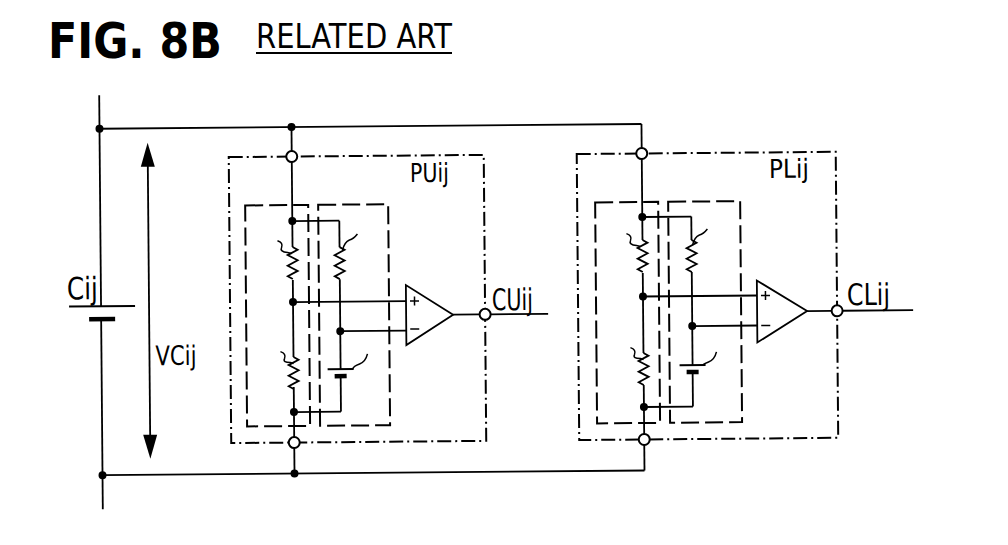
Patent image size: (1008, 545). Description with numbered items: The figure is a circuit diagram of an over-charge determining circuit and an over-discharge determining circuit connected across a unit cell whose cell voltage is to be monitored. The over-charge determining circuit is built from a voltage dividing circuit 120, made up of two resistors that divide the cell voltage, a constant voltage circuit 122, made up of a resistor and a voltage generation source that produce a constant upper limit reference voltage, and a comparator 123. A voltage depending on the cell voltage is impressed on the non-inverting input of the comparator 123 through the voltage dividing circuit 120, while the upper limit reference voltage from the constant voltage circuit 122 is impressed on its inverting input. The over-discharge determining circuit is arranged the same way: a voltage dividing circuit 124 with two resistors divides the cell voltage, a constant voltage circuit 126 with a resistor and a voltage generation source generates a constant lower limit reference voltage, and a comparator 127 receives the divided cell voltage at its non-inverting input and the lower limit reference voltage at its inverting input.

The voltage dividing circuit 120 is at (262, 202).
The constant voltage circuit 122 is at (365, 202).
The comparator 123 is at (429, 295).
The voltage dividing circuit 124 is at (614, 200).
The constant voltage circuit 126 is at (717, 201).
The comparator 127 is at (785, 290).